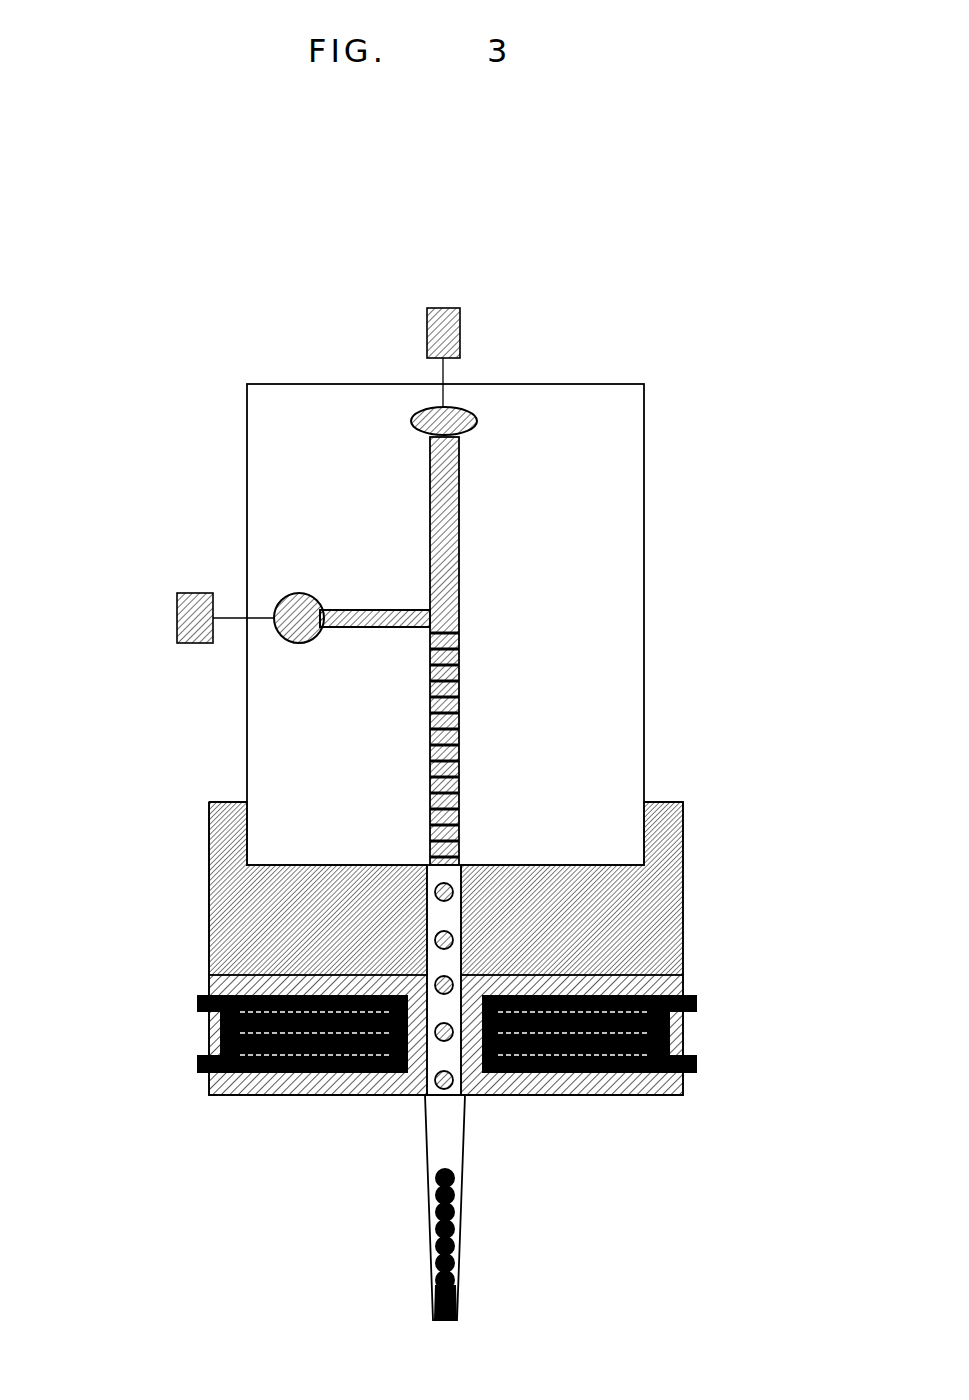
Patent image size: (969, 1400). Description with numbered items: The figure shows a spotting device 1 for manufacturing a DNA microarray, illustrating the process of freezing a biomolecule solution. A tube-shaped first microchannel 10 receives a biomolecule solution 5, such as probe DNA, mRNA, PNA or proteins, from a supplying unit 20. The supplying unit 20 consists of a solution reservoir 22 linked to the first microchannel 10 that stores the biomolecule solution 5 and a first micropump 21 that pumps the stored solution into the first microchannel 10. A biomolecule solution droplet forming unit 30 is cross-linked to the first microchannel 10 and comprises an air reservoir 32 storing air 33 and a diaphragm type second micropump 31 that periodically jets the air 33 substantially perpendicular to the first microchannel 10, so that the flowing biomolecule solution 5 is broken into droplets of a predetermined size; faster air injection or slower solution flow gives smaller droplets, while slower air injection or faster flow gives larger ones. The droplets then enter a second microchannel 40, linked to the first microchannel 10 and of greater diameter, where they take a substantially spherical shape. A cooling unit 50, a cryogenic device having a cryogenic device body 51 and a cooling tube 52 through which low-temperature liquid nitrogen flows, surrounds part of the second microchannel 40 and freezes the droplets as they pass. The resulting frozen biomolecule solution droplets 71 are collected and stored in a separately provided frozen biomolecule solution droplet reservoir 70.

The spotting device 1 is at (182, 322).
The biomolecule solution 5 is at (458, 633).
The first microchannel 10 is at (458, 566).
The supplying unit 20 is at (512, 357).
The first micropump 21 is at (452, 333).
The solution reservoir 22 is at (476, 392).
The biomolecule solution droplet forming unit 30 is at (265, 685).
The second micropump 31 is at (193, 628).
The air reservoir 32 is at (290, 637).
The air 33 is at (430, 681).
The second microchannel 40 is at (463, 913).
The cooling unit 50 is at (376, 1031).
The cryogenic device body 51 is at (212, 982).
The cooling tube 52 is at (120, 980).
The frozen biomolecule solution droplet reservoir 70 is at (467, 1207).
The frozen biomolecule solution droplets 71 is at (425, 1097).